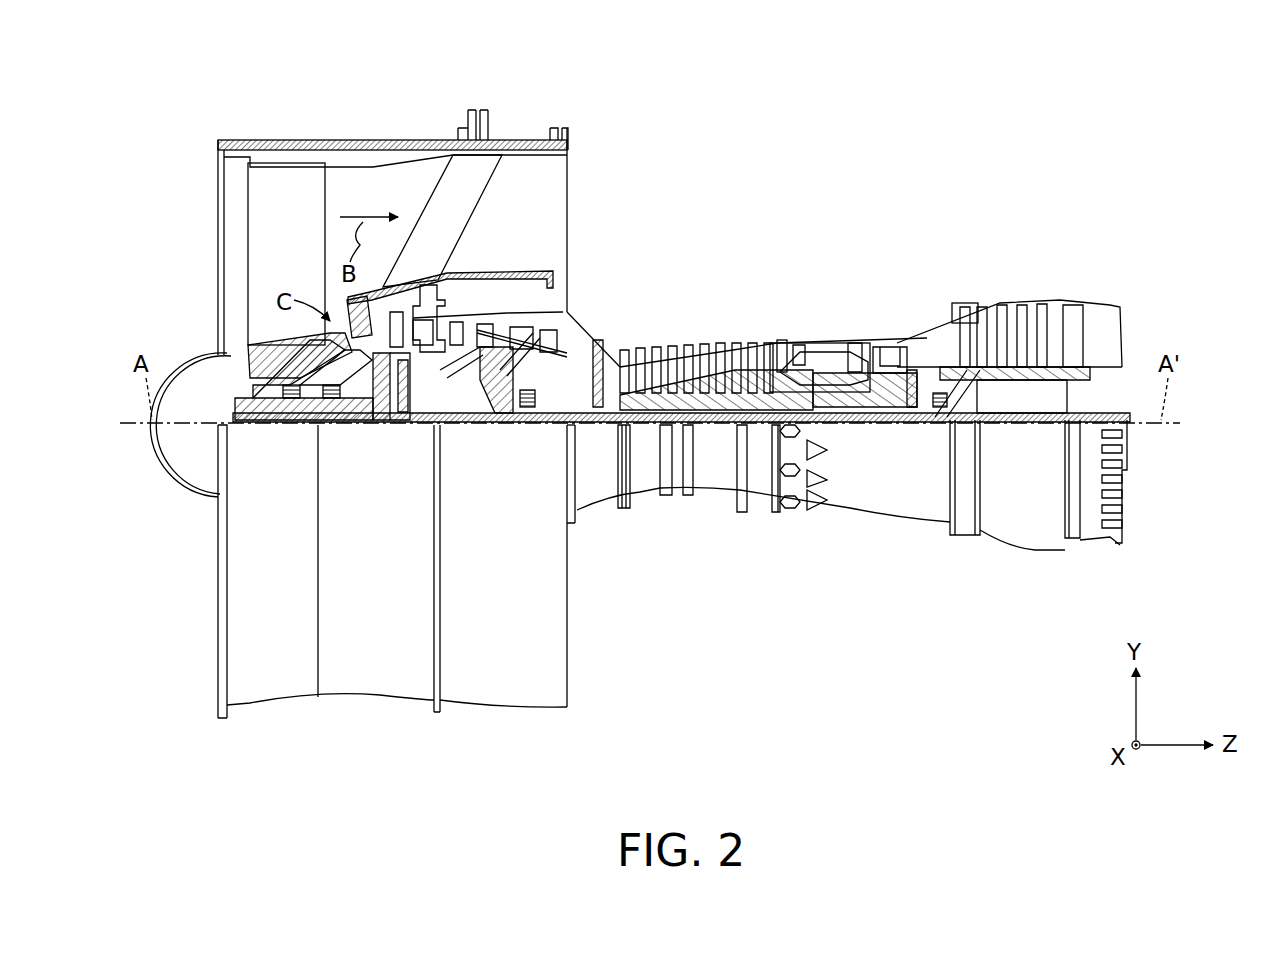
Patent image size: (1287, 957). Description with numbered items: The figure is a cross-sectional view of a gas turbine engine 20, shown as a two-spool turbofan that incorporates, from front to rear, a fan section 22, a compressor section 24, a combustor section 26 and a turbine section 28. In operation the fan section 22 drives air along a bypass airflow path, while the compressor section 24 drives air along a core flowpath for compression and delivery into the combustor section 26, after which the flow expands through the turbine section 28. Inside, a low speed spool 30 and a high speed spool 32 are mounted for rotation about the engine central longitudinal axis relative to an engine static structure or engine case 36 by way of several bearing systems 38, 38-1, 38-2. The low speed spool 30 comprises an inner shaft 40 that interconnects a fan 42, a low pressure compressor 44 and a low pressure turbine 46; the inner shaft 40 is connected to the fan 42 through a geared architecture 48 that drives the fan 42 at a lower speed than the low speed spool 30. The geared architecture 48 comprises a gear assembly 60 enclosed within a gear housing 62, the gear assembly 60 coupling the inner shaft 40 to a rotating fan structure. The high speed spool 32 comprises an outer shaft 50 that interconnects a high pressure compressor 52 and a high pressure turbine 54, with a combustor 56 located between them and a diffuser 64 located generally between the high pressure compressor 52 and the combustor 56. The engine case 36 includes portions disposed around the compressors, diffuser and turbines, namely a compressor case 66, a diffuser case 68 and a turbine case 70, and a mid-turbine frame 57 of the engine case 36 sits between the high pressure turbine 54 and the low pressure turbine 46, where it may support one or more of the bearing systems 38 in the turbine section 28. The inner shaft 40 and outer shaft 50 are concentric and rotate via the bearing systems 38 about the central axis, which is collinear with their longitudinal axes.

The gas turbine engine 20 is at (873, 134).
The fan section 22 is at (413, 128).
The compressor section 24 is at (780, 240).
The combustor section 26 is at (873, 240).
The turbine section 28 is at (1067, 240).
The low speed spool 30 is at (722, 430).
The high speed spool 32 is at (768, 363).
The engine static structure 36 is at (760, 487).
The bearing system 38 is at (933, 420).
The bearing system 38-1 is at (298, 398).
The bearing system 38-2 is at (525, 407).
The inner shaft 40 is at (590, 428).
The fan 42 is at (300, 270).
The low pressure compressor 44 is at (505, 332).
The low pressure turbine 46 is at (1010, 325).
The geared architecture 48 is at (395, 452).
The outer shaft 50 is at (830, 420).
The high pressure compressor 52 is at (717, 357).
The high pressure turbine 54 is at (887, 340).
The combustor 56 is at (833, 357).
The mid-turbine frame 57 is at (930, 340).
The gear assembly 60 is at (410, 392).
The gear housing 62 is at (410, 368).
The diffuser 64 is at (798, 353).
The compressor case 66 is at (648, 482).
The diffuser case 68 is at (792, 487).
The turbine case 70 is at (1018, 517).